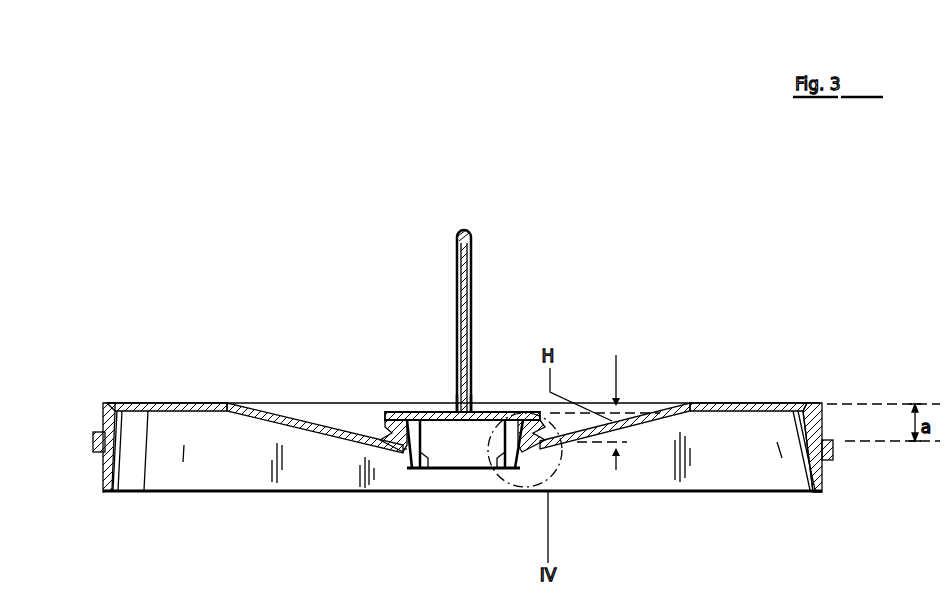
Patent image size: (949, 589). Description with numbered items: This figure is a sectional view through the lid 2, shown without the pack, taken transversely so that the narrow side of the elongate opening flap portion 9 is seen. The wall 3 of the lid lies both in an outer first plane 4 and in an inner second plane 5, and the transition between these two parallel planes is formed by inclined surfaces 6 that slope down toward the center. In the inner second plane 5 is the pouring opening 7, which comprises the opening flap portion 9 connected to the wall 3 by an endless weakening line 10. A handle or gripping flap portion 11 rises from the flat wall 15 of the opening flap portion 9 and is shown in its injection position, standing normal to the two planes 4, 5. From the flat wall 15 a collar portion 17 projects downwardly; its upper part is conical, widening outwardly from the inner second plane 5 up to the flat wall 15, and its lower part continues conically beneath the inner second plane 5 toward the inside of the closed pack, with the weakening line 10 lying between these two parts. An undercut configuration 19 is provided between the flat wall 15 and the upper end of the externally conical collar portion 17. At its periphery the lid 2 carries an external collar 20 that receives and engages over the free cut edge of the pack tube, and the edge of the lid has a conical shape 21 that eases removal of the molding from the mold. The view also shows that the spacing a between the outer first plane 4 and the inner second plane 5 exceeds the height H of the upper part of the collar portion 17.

The lid 2 is at (748, 386).
The wall of the lid 3 is at (263, 403).
The outer first plane 4 is at (884, 404).
The inner second plane 5 is at (884, 441).
The inclined surfaces 6 is at (307, 418).
The pouring opening 7 is at (476, 391).
The opening flap portion 9 is at (408, 410).
The weakening line 10 is at (405, 452).
The gripping flap portion 11 is at (473, 268).
The flat wall of the opening flap portion 15 is at (432, 412).
The collar portion 17 is at (431, 469).
The undercut configuration 19 is at (398, 428).
The collar 20 is at (93, 441).
The conical shape of the edge of the lid 21 is at (807, 423).